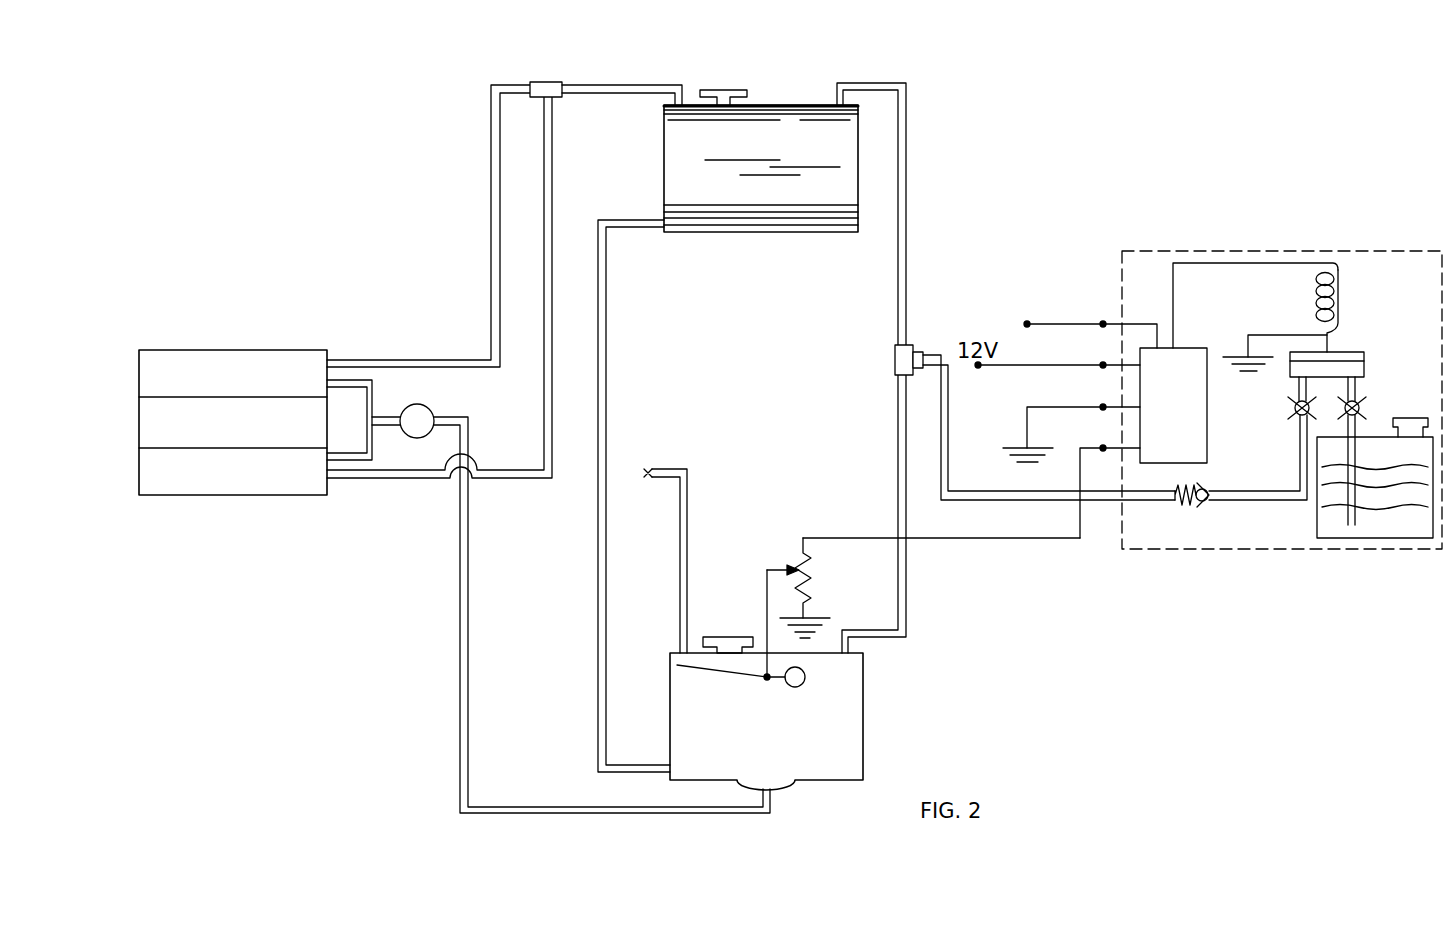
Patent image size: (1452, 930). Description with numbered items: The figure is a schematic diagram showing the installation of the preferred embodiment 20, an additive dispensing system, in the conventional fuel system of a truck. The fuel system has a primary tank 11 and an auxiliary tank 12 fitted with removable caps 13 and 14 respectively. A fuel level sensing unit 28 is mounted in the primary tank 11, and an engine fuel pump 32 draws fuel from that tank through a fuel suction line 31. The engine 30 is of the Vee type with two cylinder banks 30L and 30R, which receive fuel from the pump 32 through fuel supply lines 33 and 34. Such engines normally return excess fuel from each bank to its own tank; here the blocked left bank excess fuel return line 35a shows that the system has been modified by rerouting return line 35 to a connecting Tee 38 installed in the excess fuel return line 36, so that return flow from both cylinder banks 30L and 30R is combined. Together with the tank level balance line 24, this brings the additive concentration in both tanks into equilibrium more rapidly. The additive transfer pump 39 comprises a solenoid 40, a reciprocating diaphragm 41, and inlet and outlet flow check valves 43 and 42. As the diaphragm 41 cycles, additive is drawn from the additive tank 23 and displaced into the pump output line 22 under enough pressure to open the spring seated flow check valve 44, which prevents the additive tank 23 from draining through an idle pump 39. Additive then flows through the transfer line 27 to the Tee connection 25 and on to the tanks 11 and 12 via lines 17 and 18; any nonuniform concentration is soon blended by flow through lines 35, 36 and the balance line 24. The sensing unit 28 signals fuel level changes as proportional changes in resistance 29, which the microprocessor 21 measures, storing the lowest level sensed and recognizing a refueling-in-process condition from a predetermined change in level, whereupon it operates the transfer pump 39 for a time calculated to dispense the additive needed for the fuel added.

The primary tank 11 is at (815, 780).
The auxiliary tank 12 is at (740, 232).
The removable cap 13 is at (745, 637).
The removable cap 14 is at (715, 90).
The line 17 is at (908, 578).
The line 18 is at (906, 240).
The preferred embodiment 20 is at (1267, 207).
The microprocessor 21 is at (1190, 348).
The pump output line 22 is at (1233, 500).
The additive tank 23 is at (1410, 538).
The tank level balance line 24 is at (606, 388).
The Tee connection 25 is at (895, 360).
The transfer line 27 is at (1105, 502).
The fuel level sensing unit 28 is at (802, 703).
The resistance 29 is at (808, 580).
The engine 30 is at (240, 315).
The left cylinder bank 30L is at (139, 360).
The right cylinder bank 30R is at (139, 487).
The fuel suction line 31 is at (640, 813).
The engine fuel pump 32 is at (418, 403).
The fuel supply line 33 is at (375, 440).
The fuel supply line 34 is at (376, 395).
The return line 35 is at (500, 483).
The blocked left bank excess fuel return line 35a is at (687, 545).
The excess fuel return line 36 is at (491, 202).
The connecting Tee 38 is at (545, 80).
The additive transfer pump 39 is at (1321, 397).
The solenoid 40 is at (1316, 275).
The reciprocating diaphragm 41 is at (1350, 352).
The outlet flow check valve 42 is at (1290, 403).
The inlet flow check valve 43 is at (1365, 408).
The spring seated flow check valve 44 is at (1202, 506).